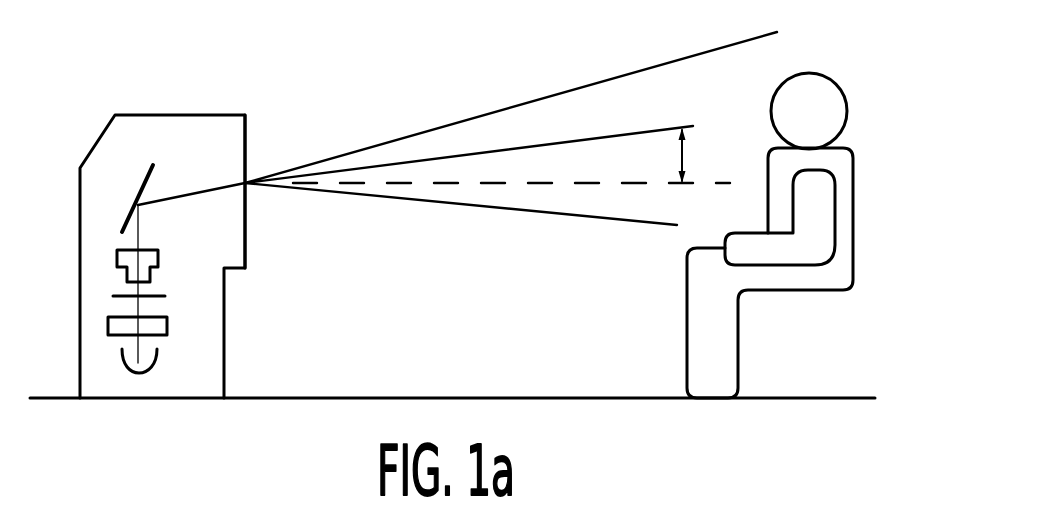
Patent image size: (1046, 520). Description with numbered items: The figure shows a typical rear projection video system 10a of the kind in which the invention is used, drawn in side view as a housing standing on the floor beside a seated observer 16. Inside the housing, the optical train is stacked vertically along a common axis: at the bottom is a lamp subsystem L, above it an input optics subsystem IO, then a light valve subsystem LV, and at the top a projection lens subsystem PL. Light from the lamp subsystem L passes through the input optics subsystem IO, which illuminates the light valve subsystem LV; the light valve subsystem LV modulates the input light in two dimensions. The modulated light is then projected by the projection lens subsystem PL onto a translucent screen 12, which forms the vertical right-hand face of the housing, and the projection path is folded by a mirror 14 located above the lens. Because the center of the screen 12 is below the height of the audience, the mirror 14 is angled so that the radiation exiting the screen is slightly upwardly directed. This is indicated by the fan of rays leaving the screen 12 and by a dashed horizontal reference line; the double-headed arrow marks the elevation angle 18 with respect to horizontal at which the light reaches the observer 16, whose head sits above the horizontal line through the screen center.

The rear projection video system 10a is at (162, 92).
The translucent screen 12 is at (240, 135).
The mirror 14 is at (155, 171).
The observer 16 is at (845, 170).
The elevation angle 18 is at (684, 164).
The projection lens subsystem PL is at (160, 258).
The light valve subsystem LV is at (157, 289).
The input optics subsystem IO is at (167, 325).
The lamp subsystem L is at (153, 360).